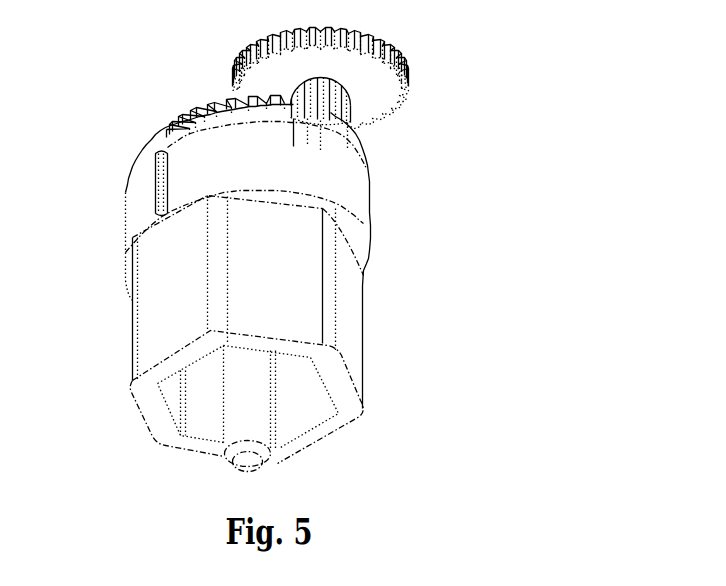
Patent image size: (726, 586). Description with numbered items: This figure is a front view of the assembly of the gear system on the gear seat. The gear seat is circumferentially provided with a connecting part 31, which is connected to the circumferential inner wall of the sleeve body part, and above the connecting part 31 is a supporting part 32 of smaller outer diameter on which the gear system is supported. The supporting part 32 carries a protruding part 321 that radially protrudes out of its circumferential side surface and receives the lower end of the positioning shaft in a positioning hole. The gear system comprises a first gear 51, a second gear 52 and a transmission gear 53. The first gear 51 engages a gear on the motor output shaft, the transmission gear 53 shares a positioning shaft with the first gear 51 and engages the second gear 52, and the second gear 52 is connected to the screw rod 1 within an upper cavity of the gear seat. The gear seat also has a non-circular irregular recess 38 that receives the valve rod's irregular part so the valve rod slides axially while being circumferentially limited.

The screw rod 1 is at (255, 368).
The connecting part 31 is at (337, 195).
The supporting part 32 is at (260, 122).
The protruding part 321 is at (345, 137).
The non-circular irregular recess 38 is at (303, 412).
The first gear 51 is at (395, 55).
The second gear 52 is at (197, 106).
The transmission gear 53 is at (347, 101).